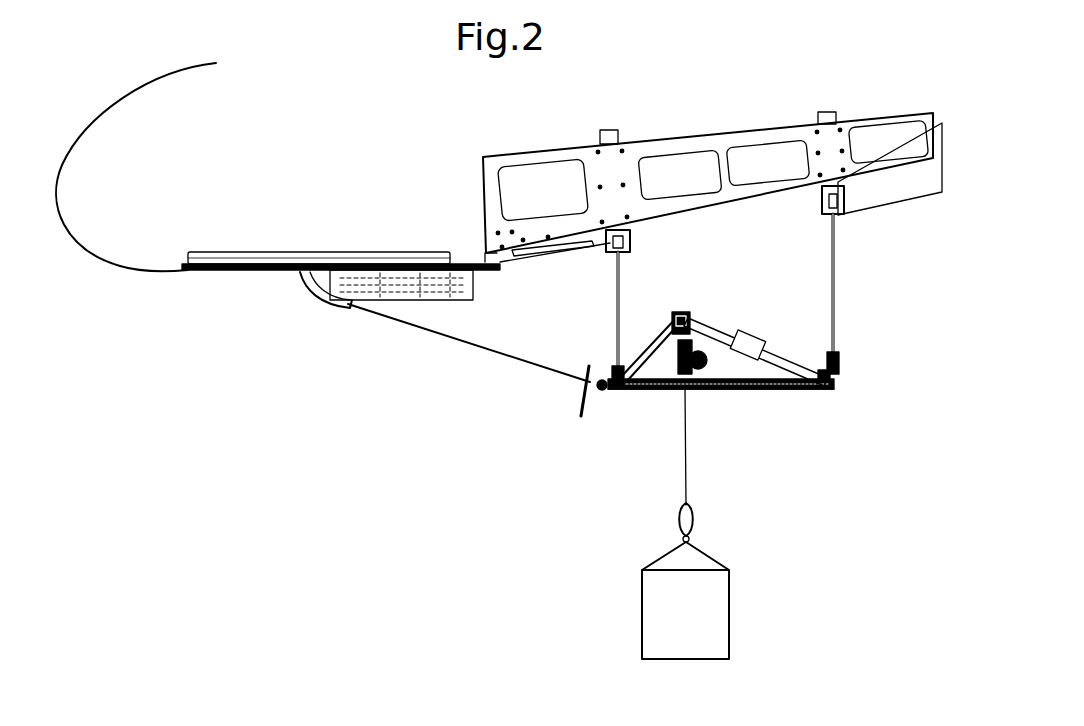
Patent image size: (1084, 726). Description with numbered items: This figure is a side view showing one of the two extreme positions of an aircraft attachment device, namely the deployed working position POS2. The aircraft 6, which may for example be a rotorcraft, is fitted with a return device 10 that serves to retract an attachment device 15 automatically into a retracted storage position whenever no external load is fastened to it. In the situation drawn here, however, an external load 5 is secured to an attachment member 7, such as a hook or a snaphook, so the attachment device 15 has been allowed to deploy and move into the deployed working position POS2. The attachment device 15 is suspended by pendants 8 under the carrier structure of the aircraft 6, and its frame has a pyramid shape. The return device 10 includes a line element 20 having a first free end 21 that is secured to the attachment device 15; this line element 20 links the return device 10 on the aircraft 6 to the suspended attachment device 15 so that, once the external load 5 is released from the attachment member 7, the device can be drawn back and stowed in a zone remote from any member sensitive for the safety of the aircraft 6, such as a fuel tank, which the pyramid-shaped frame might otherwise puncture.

The aircraft 6 is at (93, 276).
The return device 10 is at (323, 320).
The line element 20 is at (436, 336).
The first free end 21 is at (598, 364).
The attachment device 15 is at (563, 413).
The pendants 8 is at (835, 283).
The attachment member 7 is at (691, 513).
The external load 5 is at (608, 614).
The deployed working position POS2 is at (808, 403).